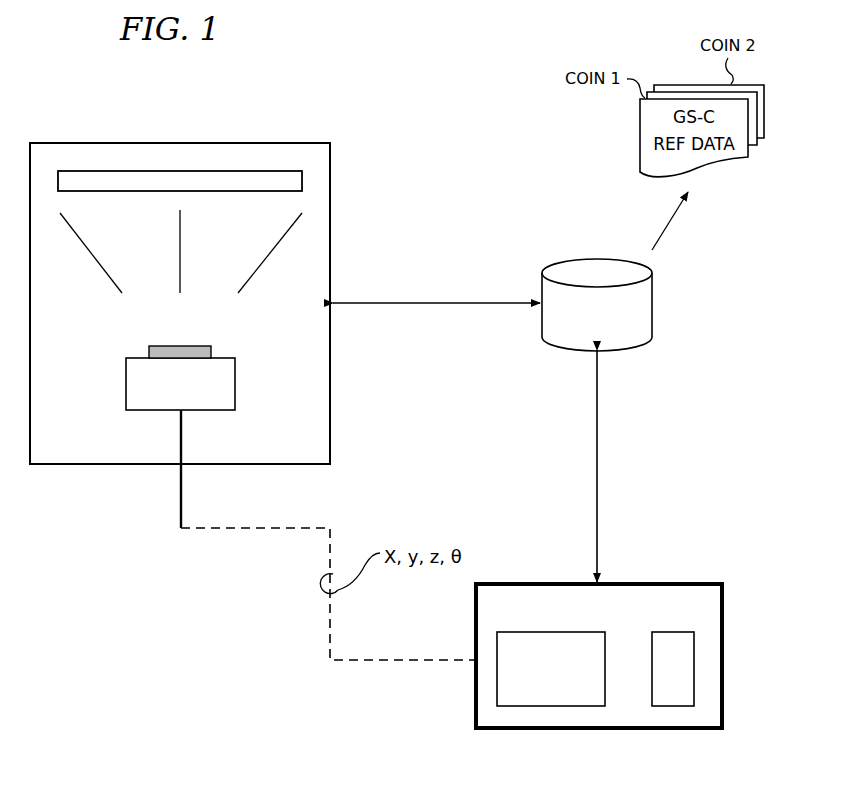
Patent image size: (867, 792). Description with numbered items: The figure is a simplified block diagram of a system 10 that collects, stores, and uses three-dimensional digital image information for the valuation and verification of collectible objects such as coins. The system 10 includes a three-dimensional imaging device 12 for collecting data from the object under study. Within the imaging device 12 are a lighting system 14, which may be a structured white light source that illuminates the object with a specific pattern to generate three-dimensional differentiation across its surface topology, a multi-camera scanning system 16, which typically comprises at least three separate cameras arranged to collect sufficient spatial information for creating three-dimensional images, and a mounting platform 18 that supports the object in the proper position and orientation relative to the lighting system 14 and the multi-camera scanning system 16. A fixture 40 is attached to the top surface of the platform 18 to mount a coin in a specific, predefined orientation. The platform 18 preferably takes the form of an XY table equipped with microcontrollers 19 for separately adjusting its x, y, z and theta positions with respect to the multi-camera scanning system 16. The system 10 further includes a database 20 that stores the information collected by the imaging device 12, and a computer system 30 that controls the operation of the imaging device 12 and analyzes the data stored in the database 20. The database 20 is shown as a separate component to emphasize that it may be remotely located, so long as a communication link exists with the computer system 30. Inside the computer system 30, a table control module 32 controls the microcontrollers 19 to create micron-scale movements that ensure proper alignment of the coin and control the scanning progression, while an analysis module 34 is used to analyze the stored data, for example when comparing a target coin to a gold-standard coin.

The system 10 is at (200, 628).
The 3D imaging device 12 is at (288, 143).
The lighting system 14 is at (218, 191).
The multi-camera scanning system 16 is at (101, 270).
The mounting platform 18 is at (125, 380).
The microcontrollers 19 is at (179, 493).
The database 20 is at (597, 305).
The computer system 30 is at (678, 584).
The table control module 32 is at (566, 632).
The analysis module 34 is at (671, 632).
The fixture 40 is at (213, 352).